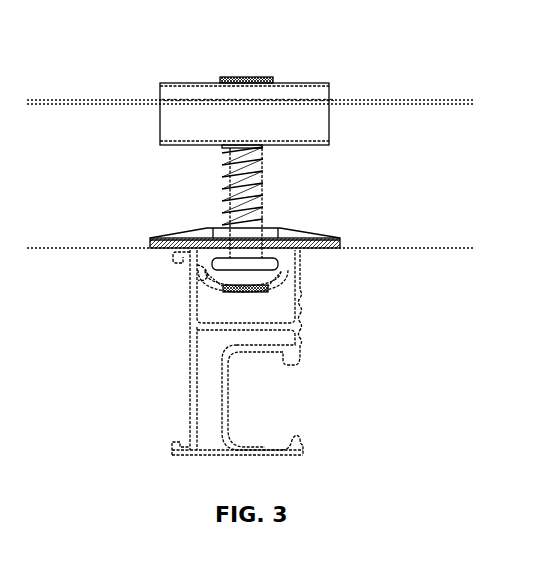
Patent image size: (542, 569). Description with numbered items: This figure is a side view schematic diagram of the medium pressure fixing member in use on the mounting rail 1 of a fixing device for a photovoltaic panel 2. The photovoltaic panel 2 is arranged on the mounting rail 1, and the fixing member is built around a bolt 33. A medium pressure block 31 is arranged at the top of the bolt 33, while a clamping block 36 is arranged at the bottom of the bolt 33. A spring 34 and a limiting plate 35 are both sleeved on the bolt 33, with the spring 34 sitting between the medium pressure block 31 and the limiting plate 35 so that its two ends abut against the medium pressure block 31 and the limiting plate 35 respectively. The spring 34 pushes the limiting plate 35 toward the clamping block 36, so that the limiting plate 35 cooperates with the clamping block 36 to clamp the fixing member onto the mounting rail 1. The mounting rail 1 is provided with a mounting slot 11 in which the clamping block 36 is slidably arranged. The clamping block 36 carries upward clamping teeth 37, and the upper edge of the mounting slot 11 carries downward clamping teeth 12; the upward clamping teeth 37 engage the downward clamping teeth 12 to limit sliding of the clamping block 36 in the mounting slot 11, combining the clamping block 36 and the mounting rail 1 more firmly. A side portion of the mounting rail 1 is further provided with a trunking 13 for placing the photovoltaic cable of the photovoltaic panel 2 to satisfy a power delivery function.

The mounting rail 1 is at (197, 327).
The photovoltaic panel 2 is at (318, 195).
The mounting slot 11 is at (283, 311).
The downward clamping teeth 12 is at (197, 265).
The trunking 13 is at (237, 375).
The medium pressure block 31 is at (177, 88).
The bolt 33 is at (250, 82).
The spring 34 is at (268, 178).
The limiting plate 35 is at (235, 232).
The clamping block 36 is at (268, 270).
The upward clamping teeth 37 is at (205, 283).